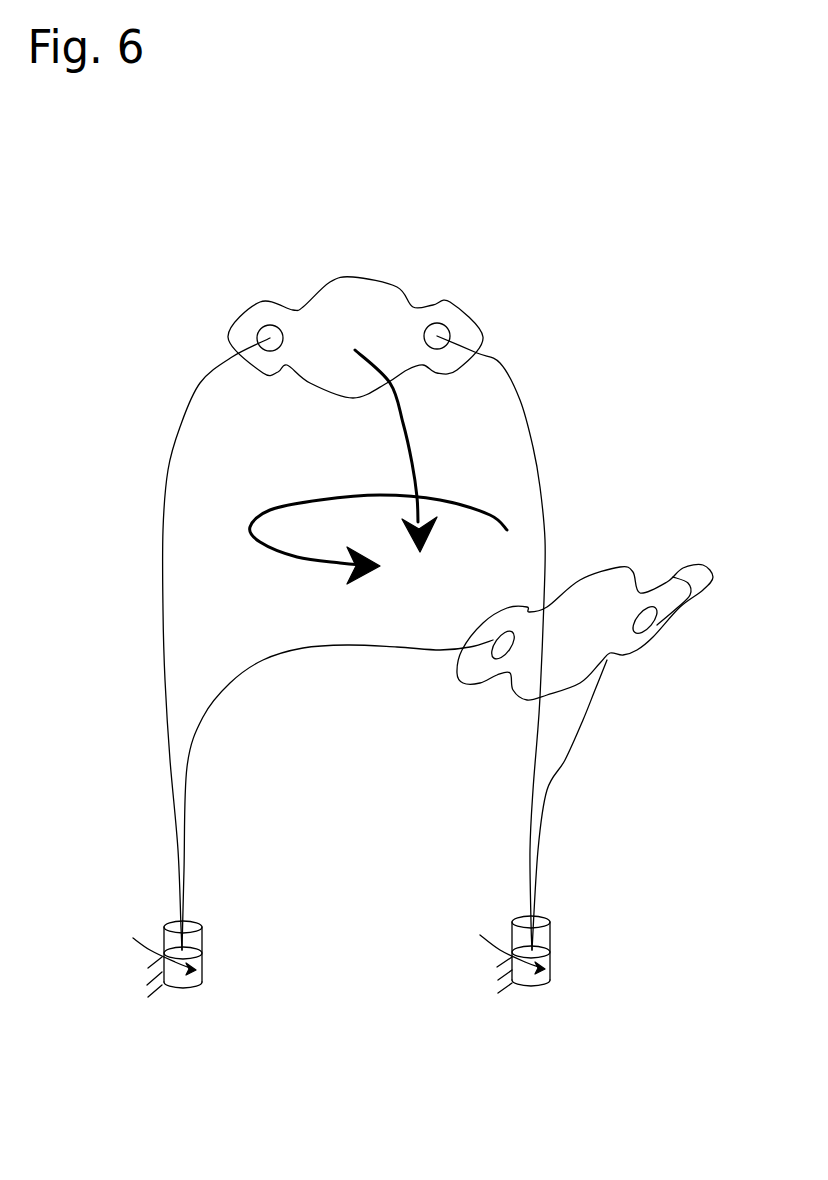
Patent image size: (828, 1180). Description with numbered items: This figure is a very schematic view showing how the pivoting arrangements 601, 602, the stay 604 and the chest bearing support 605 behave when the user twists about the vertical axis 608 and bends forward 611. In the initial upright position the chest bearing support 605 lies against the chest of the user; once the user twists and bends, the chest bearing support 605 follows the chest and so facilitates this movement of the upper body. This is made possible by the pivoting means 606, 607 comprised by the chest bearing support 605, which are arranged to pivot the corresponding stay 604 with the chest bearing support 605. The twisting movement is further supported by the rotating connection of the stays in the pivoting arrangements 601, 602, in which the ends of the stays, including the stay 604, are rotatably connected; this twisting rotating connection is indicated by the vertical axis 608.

The pivoting arrangement 601 is at (552, 935).
The pivoting arrangement 602 is at (167, 948).
The stay 604 is at (162, 540).
The chest bearing support 605 is at (354, 300).
The pivoting means 606 is at (272, 335).
The pivoting means 607 is at (438, 330).
The vertical axis 608 is at (273, 507).
The bending forward 611 is at (412, 448).